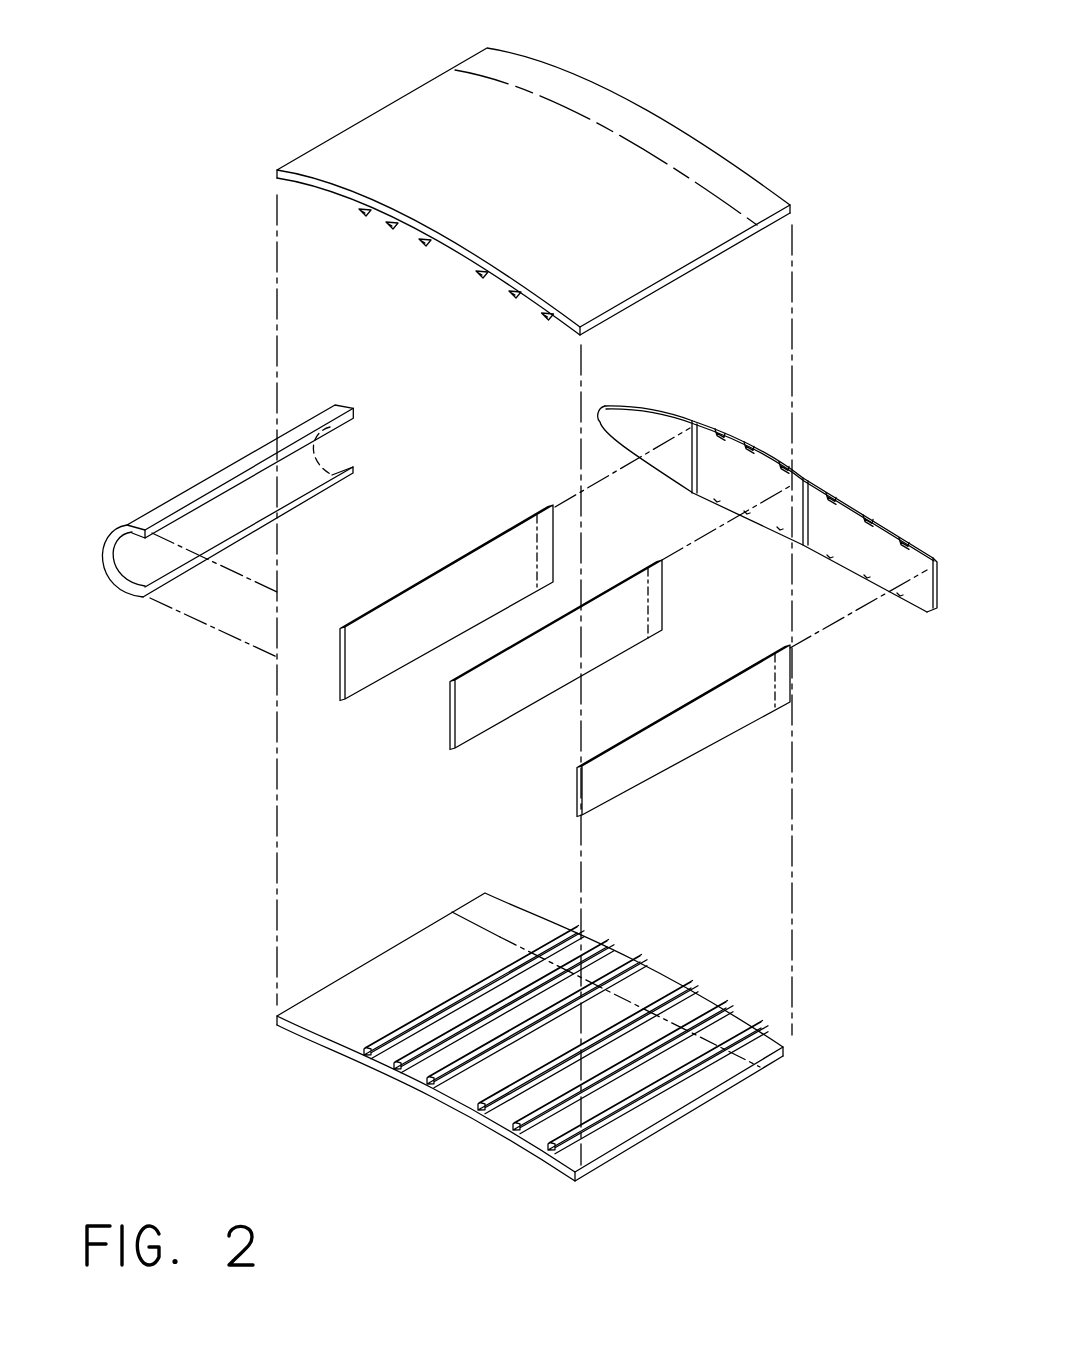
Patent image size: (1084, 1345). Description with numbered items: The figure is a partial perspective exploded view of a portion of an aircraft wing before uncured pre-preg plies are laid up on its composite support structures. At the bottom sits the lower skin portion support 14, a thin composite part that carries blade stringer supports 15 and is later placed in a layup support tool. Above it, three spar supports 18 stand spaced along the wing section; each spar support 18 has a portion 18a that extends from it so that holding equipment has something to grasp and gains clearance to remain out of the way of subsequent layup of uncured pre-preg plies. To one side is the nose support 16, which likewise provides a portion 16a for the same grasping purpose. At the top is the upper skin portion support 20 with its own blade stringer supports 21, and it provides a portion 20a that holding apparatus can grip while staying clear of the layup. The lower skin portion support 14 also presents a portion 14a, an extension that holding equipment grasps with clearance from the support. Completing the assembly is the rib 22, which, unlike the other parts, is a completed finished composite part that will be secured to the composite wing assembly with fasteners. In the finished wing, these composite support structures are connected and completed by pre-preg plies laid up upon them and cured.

The lower skin portion support 14 is at (630, 1048).
The portion of lower skin portion support 14a is at (500, 920).
The blade stringer supports 15 is at (640, 966).
The nose support 16 is at (124, 527).
The portion of nose support 16a is at (348, 422).
The spar supports 18 is at (340, 632).
The portion of spar support 18a is at (545, 545).
The upper skin portion support 20 is at (515, 123).
The portion of upper skin portion support 20a is at (678, 155).
The blade stringer supports 21 is at (482, 272).
The rib 22 is at (867, 543).